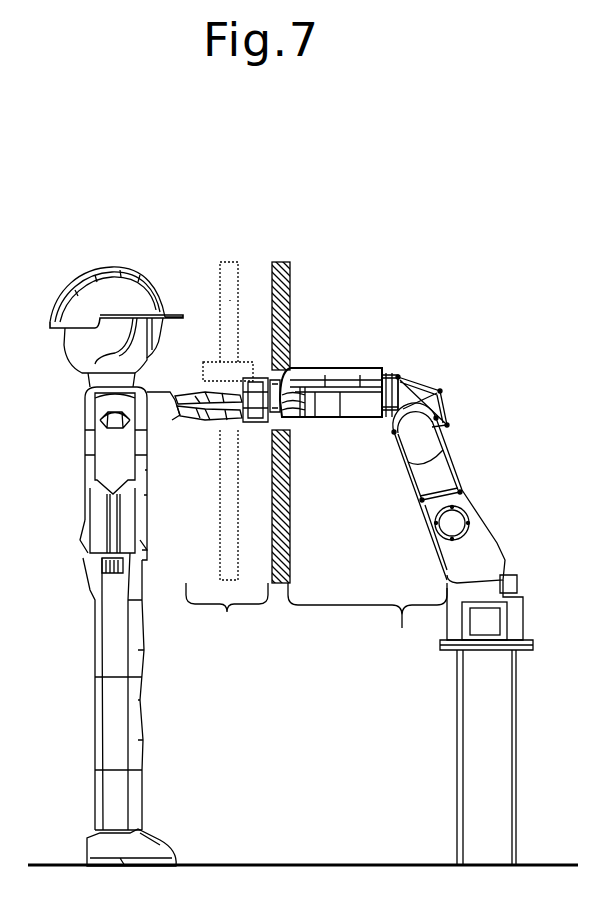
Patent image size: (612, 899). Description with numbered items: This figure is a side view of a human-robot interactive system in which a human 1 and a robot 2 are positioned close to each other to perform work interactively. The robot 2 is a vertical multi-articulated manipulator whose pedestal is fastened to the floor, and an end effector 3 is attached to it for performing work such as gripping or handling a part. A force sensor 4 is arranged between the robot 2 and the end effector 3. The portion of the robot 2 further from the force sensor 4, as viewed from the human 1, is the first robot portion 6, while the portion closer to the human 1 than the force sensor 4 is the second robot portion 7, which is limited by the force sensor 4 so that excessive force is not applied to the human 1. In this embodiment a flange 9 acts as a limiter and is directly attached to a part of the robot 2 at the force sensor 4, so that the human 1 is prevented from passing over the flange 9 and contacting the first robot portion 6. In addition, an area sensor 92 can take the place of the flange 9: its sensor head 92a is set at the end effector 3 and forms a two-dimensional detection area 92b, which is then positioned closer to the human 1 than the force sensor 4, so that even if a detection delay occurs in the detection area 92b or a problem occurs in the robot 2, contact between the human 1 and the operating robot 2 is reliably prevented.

The human 1 is at (90, 308).
The robot 2 is at (415, 432).
The end effector 3 is at (185, 418).
The force sensor 4 is at (292, 367).
The first robot portion 6 is at (367, 618).
The second robot portion 7 is at (227, 610).
The flange 9 is at (290, 262).
The area sensor 92 is at (202, 233).
The sensor head 92a is at (217, 372).
The detection area 92b is at (220, 262).